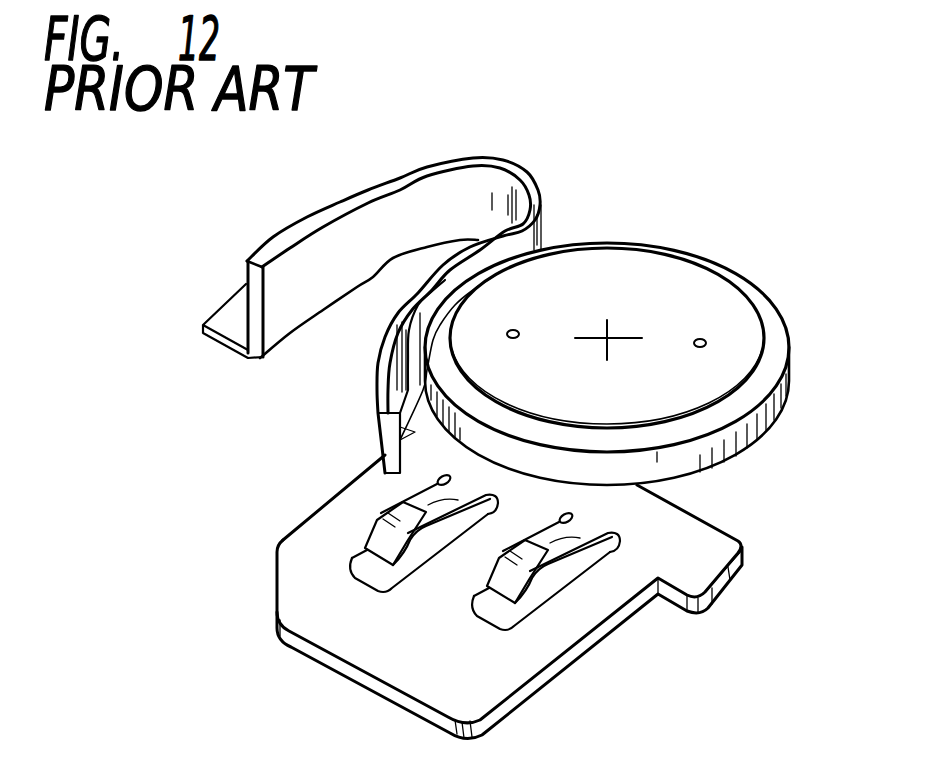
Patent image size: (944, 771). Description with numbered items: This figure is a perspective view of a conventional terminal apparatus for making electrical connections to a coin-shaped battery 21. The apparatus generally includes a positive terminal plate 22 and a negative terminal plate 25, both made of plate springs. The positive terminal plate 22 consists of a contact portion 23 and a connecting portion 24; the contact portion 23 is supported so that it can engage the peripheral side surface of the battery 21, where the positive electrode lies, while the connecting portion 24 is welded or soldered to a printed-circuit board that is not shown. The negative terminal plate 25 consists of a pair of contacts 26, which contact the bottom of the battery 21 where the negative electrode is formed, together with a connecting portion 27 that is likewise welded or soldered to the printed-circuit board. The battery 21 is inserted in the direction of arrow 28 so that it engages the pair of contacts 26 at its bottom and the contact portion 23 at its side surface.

The coin-shaped battery 21 is at (693, 392).
The positive terminal plate 22 is at (483, 158).
The contact portion 23 is at (382, 387).
The connecting portion 24 is at (228, 313).
The negative terminal plate 25 is at (380, 668).
The pair of contacts 26 is at (533, 553).
The connecting portion 27 is at (692, 573).
The arrow 28 is at (757, 227).